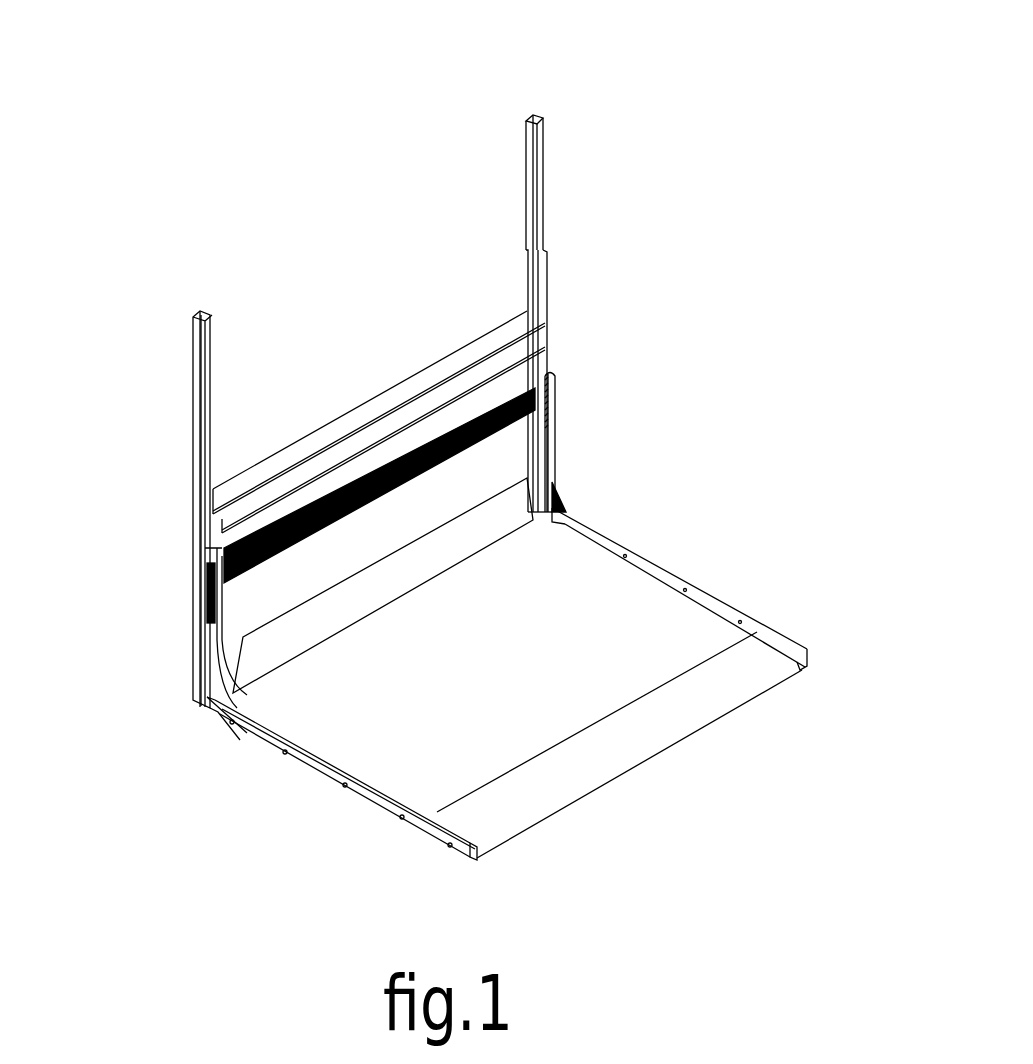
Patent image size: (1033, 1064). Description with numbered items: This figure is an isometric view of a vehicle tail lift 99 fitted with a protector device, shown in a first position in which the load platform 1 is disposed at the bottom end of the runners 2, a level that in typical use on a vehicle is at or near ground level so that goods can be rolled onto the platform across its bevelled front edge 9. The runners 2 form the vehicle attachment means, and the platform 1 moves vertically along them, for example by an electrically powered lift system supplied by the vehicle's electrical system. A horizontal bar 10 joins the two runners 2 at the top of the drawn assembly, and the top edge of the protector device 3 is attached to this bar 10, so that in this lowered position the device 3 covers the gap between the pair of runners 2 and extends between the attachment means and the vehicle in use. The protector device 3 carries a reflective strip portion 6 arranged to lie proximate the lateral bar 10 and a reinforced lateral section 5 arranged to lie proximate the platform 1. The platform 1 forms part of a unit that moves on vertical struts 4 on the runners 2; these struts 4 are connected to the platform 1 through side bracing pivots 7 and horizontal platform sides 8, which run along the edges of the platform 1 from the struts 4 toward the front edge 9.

The tail lift 99 is at (718, 112).
The platform 1 is at (367, 727).
The runners 2 is at (194, 391).
The protector device 3 is at (512, 453).
The vertical struts 4 is at (550, 410).
The reinforced lateral section 5 is at (272, 640).
The reflective strip portion 6 is at (250, 547).
The side bracing pivots 7 is at (227, 720).
The horizontal platform sides 8 is at (371, 808).
The bevelled front edge 9 is at (582, 768).
The horizontal bar 10 is at (403, 385).